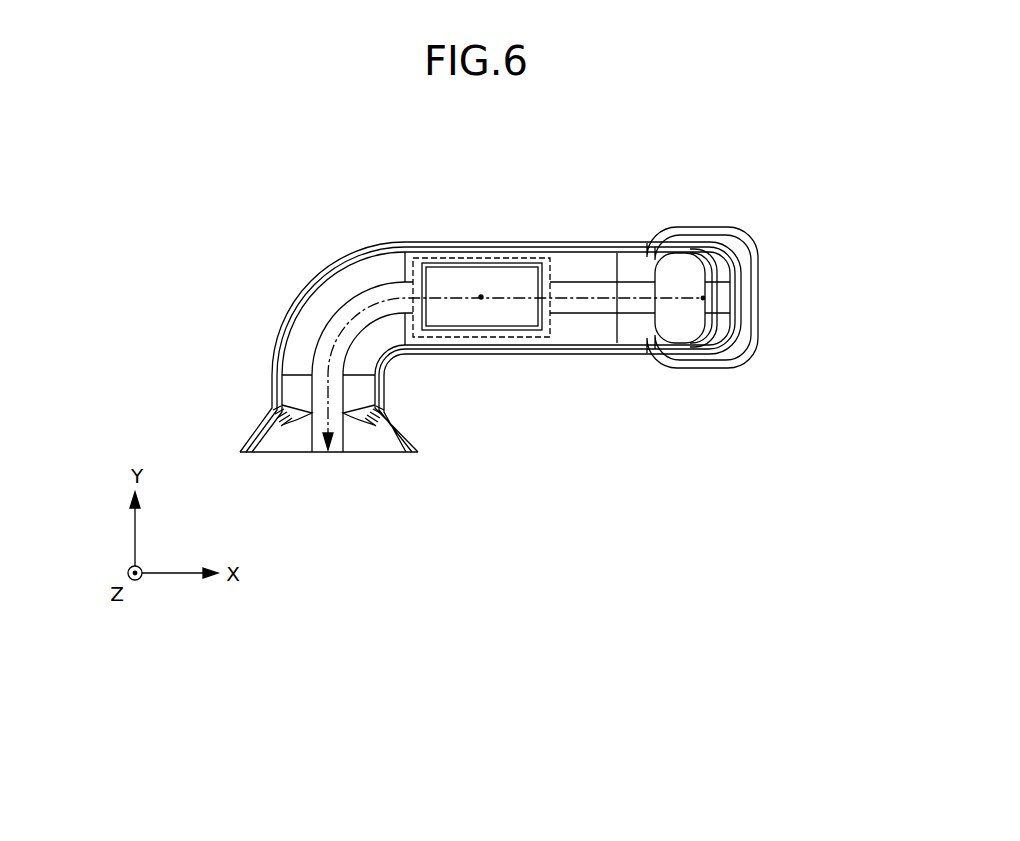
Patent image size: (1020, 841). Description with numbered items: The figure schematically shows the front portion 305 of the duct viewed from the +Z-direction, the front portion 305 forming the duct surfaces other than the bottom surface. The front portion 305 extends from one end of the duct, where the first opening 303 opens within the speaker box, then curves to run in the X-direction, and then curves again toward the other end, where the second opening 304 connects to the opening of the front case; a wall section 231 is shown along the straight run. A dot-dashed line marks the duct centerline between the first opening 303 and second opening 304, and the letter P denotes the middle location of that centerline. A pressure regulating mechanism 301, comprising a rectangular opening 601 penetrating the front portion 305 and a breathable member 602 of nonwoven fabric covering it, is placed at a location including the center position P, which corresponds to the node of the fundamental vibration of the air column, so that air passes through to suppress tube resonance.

The front portion 305 is at (372, 243).
The straight duct portion 231 is at (532, 243).
The second opening 304 is at (682, 272).
The first opening 303 is at (366, 443).
The pressure regulating mechanism 301 is at (513, 364).
The opening 601 is at (528, 318).
The breathable member 602 is at (550, 320).
The center position P is at (481, 299).